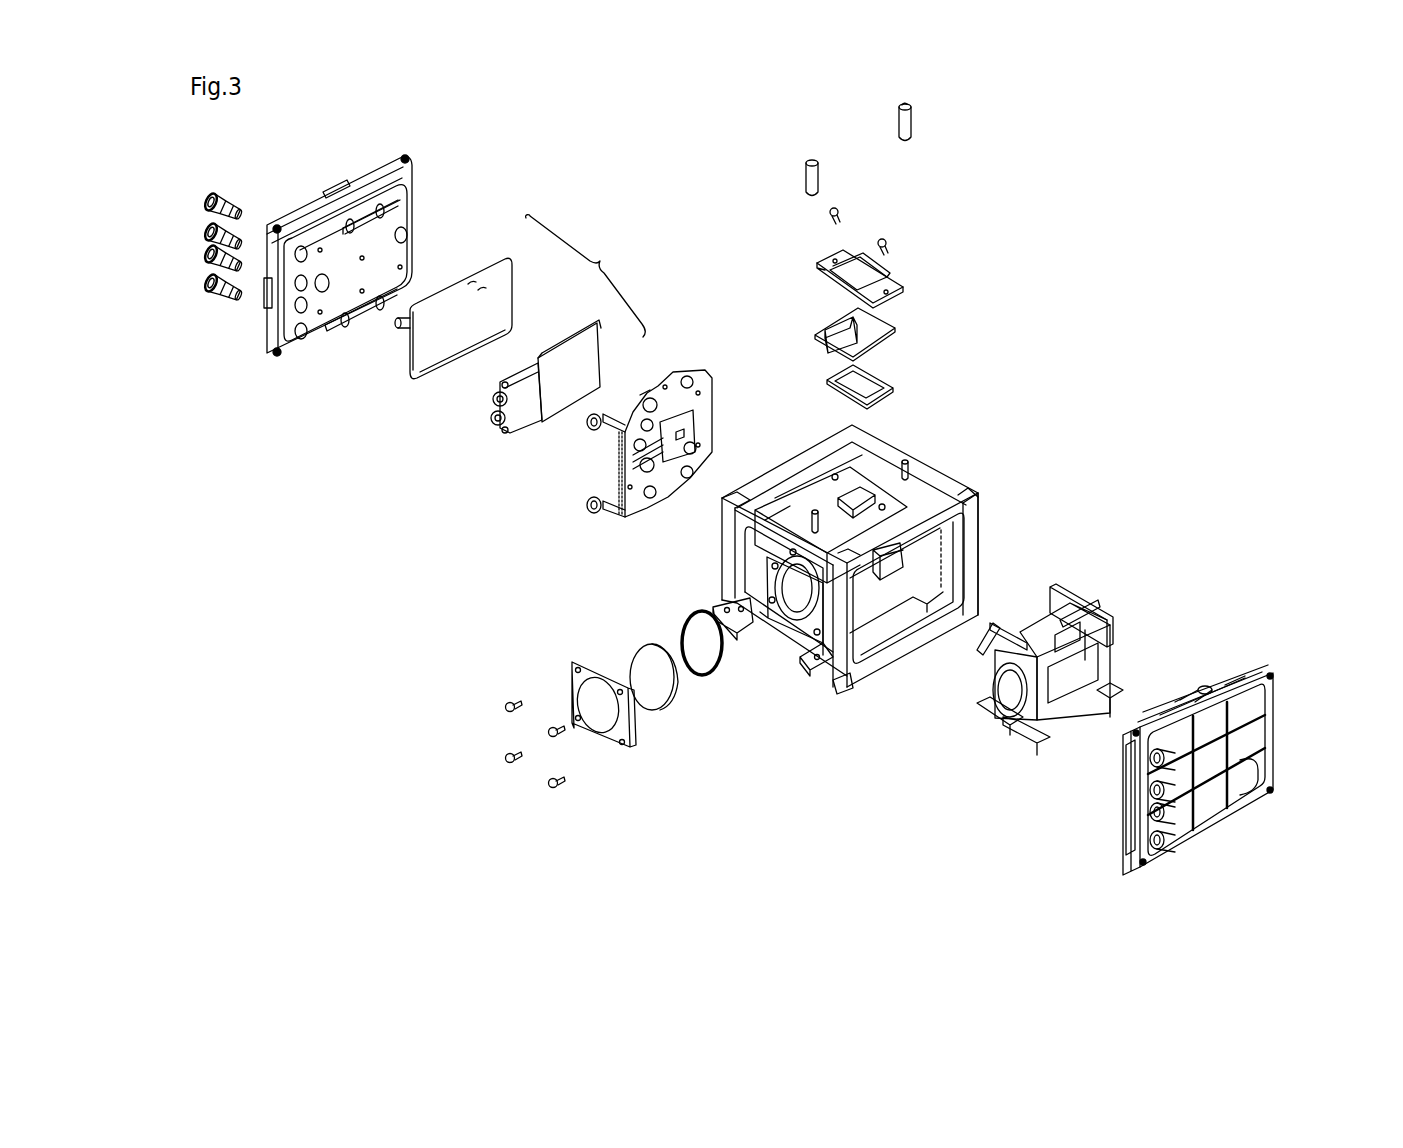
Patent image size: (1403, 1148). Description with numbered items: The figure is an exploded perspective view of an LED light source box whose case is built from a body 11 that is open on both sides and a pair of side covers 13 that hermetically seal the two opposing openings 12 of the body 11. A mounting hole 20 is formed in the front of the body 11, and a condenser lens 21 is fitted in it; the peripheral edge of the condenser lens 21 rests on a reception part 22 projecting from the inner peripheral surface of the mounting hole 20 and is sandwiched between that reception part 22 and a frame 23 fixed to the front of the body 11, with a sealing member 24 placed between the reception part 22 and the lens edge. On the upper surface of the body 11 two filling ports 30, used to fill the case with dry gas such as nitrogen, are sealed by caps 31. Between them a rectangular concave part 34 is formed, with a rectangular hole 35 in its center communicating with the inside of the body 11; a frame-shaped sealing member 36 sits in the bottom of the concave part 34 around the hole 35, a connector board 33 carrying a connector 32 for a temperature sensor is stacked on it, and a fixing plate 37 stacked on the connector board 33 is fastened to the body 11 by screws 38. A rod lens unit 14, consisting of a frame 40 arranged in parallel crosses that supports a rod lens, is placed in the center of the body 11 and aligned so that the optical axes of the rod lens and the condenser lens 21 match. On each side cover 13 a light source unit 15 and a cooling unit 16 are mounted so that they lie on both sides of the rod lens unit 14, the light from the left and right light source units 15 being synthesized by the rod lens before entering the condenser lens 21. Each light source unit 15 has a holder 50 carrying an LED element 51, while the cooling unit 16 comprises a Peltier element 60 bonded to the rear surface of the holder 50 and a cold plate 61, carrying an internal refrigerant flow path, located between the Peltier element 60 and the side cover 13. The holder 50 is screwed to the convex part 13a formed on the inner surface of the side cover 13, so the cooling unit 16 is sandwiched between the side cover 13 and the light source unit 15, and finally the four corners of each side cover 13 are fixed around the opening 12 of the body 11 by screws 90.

The body 11 is at (884, 552).
The opening 12 is at (962, 550).
The side cover 13 is at (405, 157).
The convex part 13a is at (407, 252).
The rod lens unit 14 is at (1108, 603).
The light source unit 15 is at (715, 366).
The cooling unit 16 is at (1240, 675).
The mounting hole 20 is at (800, 605).
The condenser lens 21 is at (665, 700).
The reception part 22 is at (782, 606).
The frame 23 is at (630, 750).
The sealing member 24 is at (721, 676).
The filling port 30 is at (811, 507).
The cap 31 is at (914, 113).
The connector 32 is at (824, 333).
The connector board 33 is at (870, 334).
The concave part 34 is at (812, 508).
The hole 35 is at (868, 490).
The sealing member 36 is at (880, 383).
The fixing plate 37 is at (892, 282).
The screw 38 is at (840, 212).
The frame 40 is at (1043, 754).
The holder 50 is at (709, 386).
The LED element 51 is at (698, 428).
The Peltier element 60 is at (553, 422).
The cold plate 61 is at (428, 372).
The screw 90 is at (277, 226).